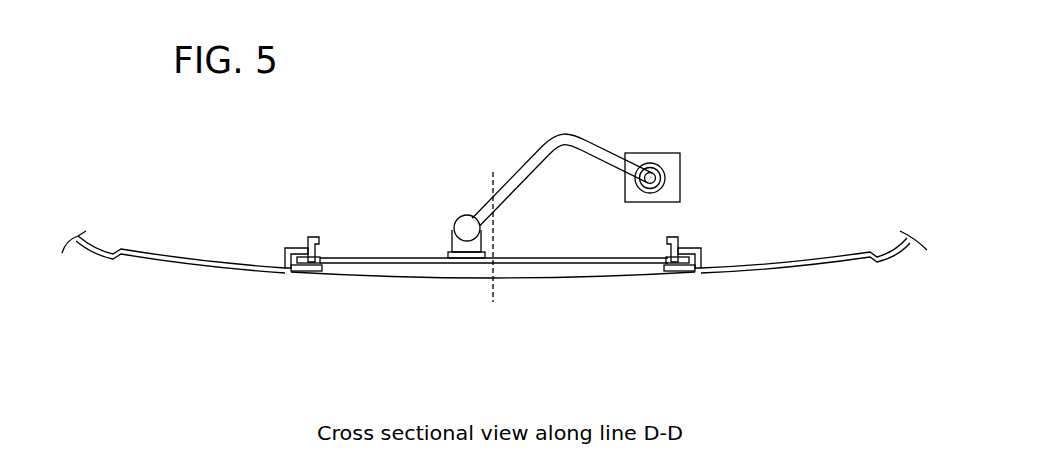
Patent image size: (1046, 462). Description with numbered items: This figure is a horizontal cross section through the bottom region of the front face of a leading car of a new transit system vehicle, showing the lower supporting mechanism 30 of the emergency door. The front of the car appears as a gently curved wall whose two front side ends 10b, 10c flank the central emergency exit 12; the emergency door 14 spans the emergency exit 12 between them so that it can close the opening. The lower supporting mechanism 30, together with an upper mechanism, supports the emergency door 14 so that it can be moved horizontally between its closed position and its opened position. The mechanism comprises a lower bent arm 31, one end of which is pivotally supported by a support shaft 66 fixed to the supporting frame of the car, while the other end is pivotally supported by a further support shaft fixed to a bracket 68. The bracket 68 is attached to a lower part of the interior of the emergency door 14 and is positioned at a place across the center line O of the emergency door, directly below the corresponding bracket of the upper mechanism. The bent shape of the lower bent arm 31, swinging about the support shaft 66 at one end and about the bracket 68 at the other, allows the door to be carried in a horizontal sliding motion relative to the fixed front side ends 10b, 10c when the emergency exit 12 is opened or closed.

The lower supporting mechanism 30 is at (569, 155).
The lower bent arm 31 is at (507, 178).
The support shaft 66 is at (661, 195).
The bracket 68 is at (452, 236).
The emergency exit 12 is at (691, 275).
The emergency door 14 is at (572, 278).
The front side end 10b is at (795, 267).
The front side end 10c is at (183, 266).
The center line O is at (495, 279).